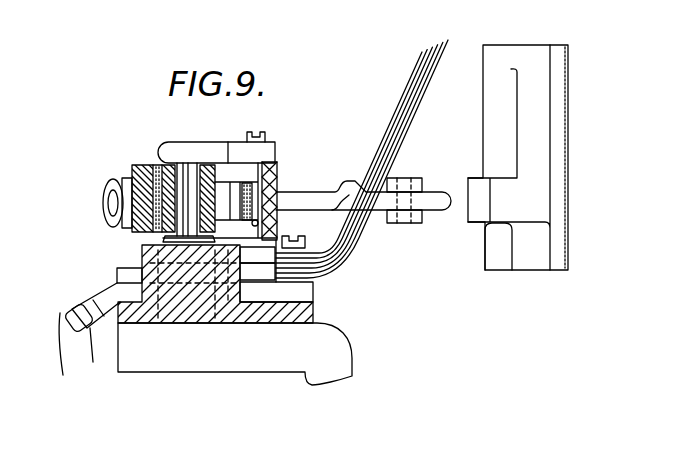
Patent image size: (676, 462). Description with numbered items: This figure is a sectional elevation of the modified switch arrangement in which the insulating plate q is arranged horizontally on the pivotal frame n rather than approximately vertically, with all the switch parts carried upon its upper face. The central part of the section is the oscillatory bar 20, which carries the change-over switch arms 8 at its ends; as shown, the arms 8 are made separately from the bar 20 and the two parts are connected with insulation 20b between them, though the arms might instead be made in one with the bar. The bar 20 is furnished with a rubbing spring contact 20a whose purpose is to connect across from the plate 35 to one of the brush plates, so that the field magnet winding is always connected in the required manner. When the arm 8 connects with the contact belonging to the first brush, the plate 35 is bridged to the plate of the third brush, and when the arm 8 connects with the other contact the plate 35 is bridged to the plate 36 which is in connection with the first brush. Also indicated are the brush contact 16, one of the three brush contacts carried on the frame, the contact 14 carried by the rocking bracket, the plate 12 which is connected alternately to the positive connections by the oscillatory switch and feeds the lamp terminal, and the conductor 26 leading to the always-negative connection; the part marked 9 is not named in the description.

The arm 8 is at (317, 192).
The support block 9 is at (211, 310).
The plate 12 is at (235, 354).
The contact 14 is at (518, 175).
The brush contact 16 is at (352, 232).
The oscillatory bar 20 is at (102, 203).
The rubbing spring contact 20a is at (253, 226).
The insulation 20b is at (157, 166).
The conductor 26 is at (70, 305).
The plate 35 is at (278, 223).
The plate 36 is at (272, 165).